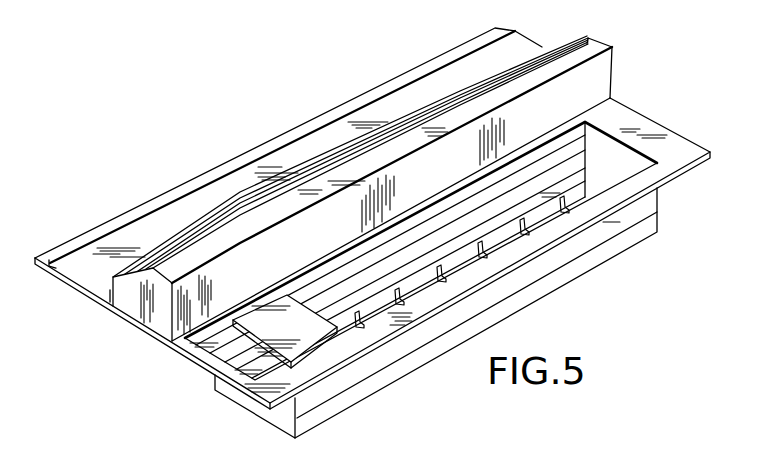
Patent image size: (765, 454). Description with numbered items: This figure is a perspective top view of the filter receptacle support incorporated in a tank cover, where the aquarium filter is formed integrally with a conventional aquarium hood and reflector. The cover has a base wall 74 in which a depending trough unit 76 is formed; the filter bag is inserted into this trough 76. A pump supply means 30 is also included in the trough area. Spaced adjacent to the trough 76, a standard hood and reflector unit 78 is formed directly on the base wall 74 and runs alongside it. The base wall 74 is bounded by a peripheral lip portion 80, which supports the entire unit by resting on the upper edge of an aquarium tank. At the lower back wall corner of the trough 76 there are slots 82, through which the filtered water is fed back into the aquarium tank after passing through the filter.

The pump supply means 30 is at (243, 332).
The base wall 74 is at (76, 242).
The trough unit 76 is at (604, 165).
The hood and reflector unit 78 is at (592, 36).
The peripheral lip portion 80 is at (669, 169).
The slots 82 is at (447, 279).